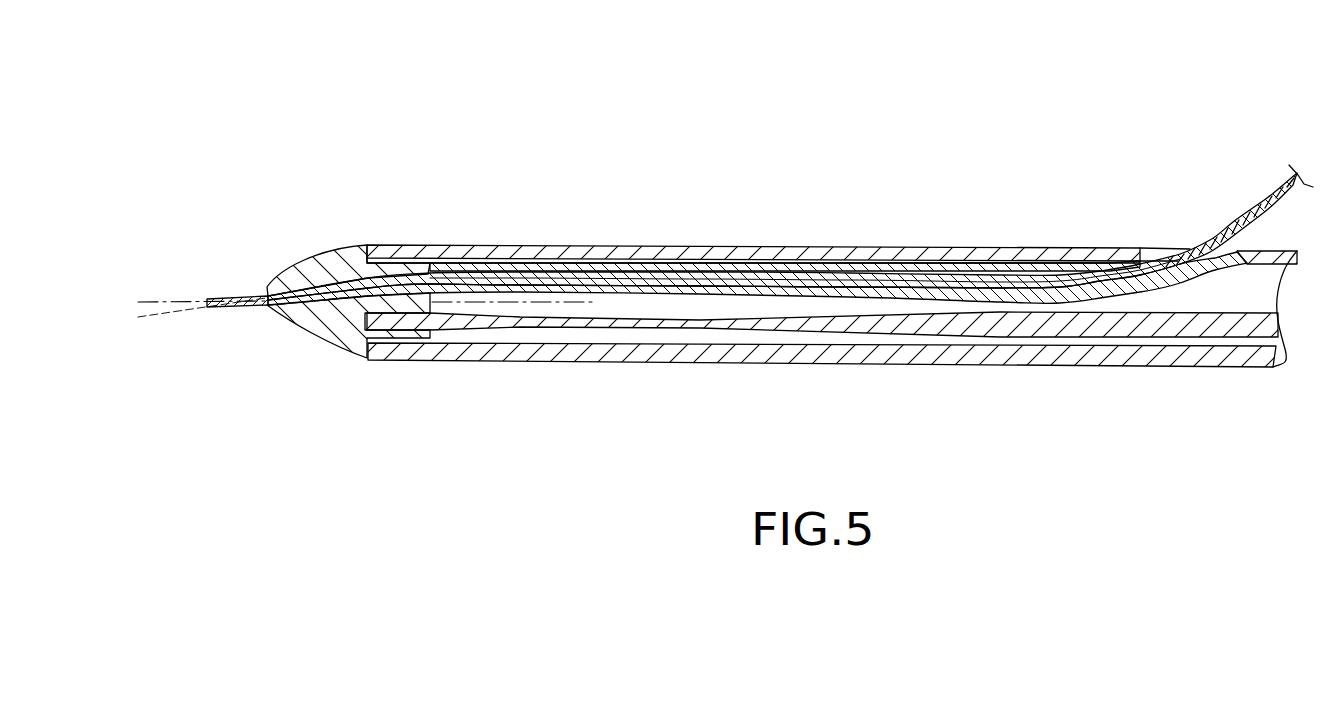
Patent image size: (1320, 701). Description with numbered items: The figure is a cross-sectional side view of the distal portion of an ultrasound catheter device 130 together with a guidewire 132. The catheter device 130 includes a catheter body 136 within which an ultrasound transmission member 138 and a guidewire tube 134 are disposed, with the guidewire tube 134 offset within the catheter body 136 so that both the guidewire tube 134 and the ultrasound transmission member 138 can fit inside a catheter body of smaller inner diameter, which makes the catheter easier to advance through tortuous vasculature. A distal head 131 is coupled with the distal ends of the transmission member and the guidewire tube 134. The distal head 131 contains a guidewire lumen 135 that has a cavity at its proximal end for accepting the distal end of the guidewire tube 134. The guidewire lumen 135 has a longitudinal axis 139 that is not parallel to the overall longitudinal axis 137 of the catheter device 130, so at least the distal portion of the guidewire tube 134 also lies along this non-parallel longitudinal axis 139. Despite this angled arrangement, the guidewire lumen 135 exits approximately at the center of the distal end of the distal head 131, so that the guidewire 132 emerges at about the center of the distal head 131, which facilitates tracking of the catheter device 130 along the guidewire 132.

The ultrasound catheter device 130 is at (873, 120).
The distal head 131 is at (328, 245).
The guidewire 132 is at (1027, 218).
The guidewire tube 134 is at (1187, 183).
The guidewire lumen 135 is at (240, 350).
The catheter body 136 is at (672, 246).
The longitudinal axis 137 is at (162, 300).
The ultrasound transmission member 138 is at (677, 413).
The longitudinal axis 139 is at (162, 368).